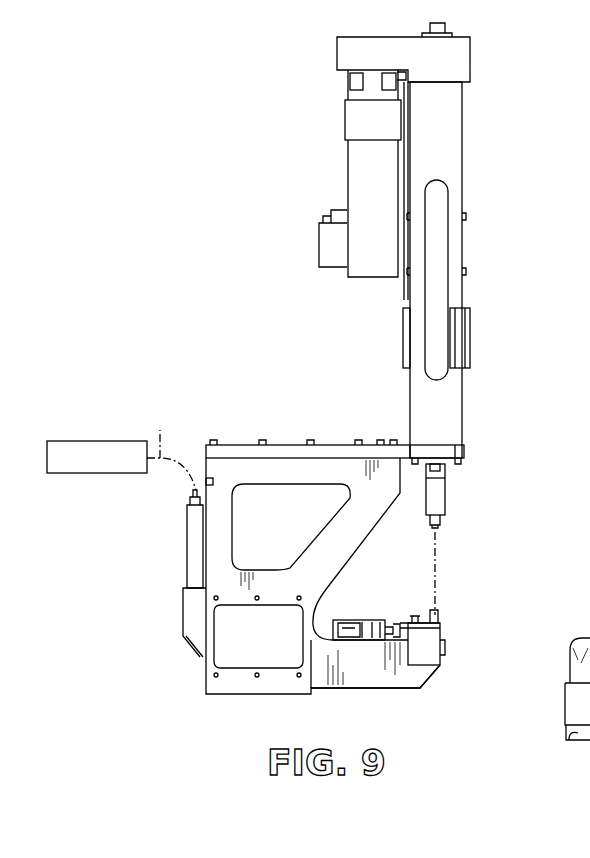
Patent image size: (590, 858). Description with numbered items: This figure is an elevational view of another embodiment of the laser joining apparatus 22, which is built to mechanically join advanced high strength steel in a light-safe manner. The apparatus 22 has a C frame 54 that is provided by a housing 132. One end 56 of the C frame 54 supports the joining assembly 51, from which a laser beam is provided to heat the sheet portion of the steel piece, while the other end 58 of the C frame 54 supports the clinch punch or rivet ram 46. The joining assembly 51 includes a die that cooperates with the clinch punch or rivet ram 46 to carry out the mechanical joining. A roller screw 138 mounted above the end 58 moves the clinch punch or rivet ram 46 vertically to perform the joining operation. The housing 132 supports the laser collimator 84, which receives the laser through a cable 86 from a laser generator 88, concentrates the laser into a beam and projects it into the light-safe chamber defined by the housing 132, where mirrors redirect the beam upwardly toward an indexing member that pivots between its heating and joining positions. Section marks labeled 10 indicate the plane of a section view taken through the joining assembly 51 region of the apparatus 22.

The roller screw 138 is at (462, 170).
The laser joining apparatus 22 is at (482, 475).
The another end of the C frame 58 is at (410, 445).
The clinch punch or rivet ram 46 is at (445, 522).
The C frame 54 is at (221, 472).
The laser generator 88 is at (97, 457).
The cable 86 is at (160, 430).
The laser collimator 84 is at (187, 543).
The housing 132 is at (215, 568).
The section view indicator 10 is at (369, 573).
The joining assembly 51 is at (457, 627).
The one end of the C frame 56 is at (432, 676).